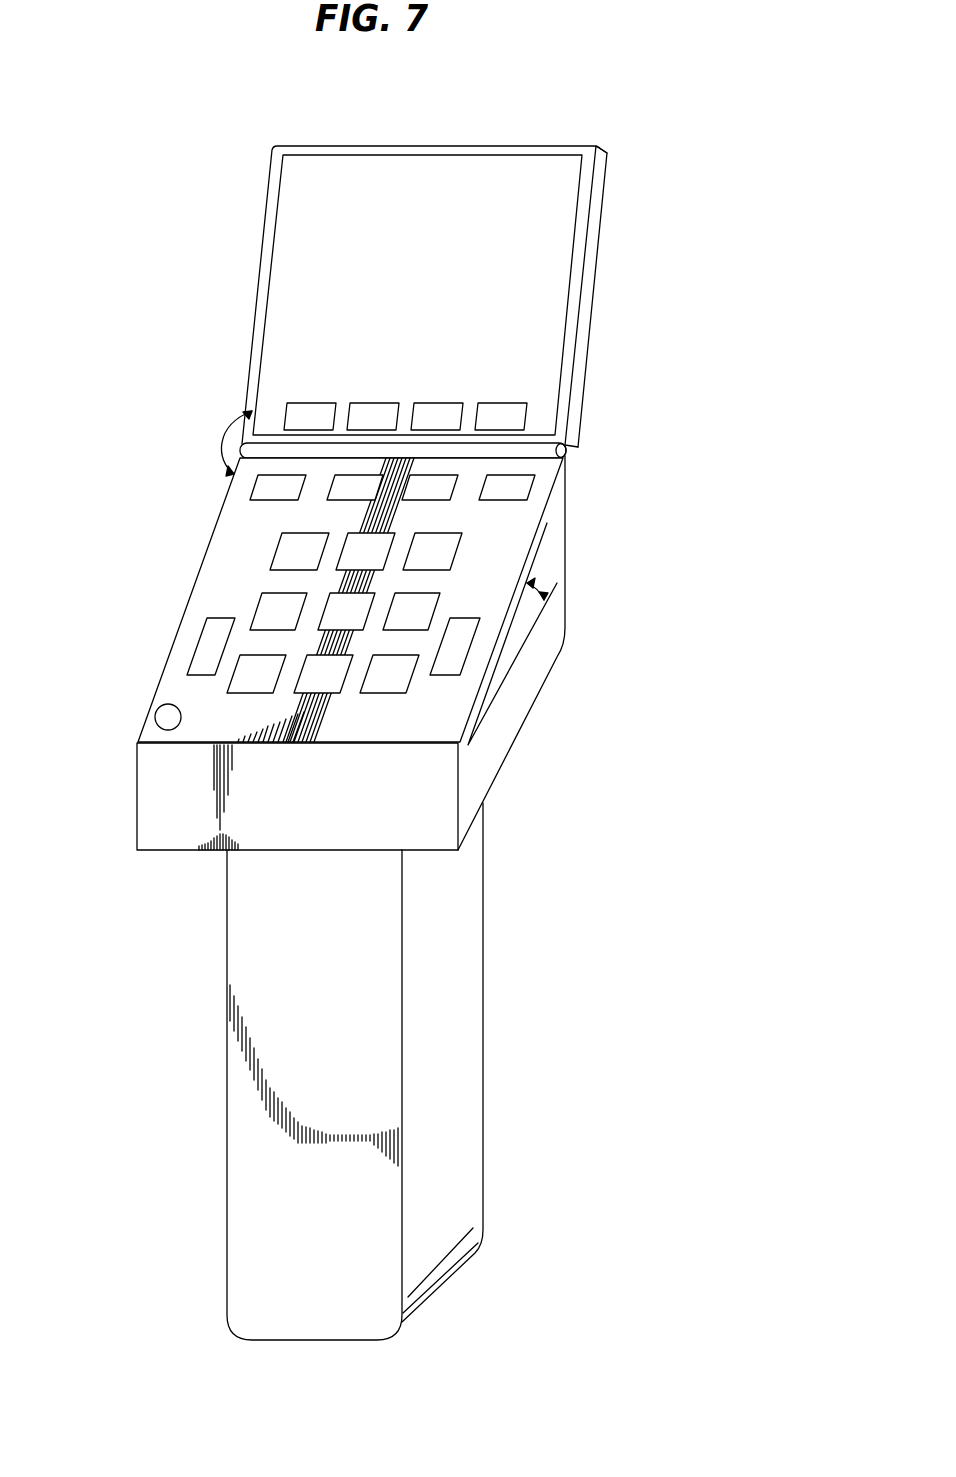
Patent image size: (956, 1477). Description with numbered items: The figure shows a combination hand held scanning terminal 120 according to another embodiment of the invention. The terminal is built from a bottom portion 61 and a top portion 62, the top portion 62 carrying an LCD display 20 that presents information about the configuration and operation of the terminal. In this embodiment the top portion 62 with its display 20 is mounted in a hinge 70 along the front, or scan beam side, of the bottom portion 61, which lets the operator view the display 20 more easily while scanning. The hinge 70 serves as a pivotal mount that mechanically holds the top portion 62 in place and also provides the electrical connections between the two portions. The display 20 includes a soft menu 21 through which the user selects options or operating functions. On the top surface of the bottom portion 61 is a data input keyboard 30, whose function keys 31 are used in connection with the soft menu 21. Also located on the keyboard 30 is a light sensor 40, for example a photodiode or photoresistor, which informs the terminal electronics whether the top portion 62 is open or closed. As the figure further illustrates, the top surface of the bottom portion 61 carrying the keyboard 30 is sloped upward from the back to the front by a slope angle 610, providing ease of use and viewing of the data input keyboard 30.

The combination hand held scanning terminal 120 is at (413, 92).
The top portion 62 is at (274, 146).
The LCD display 20 is at (540, 237).
The soft menu 21 is at (514, 412).
The hinge 70 is at (567, 451).
The function keys 31 is at (510, 483).
The angle α 610 is at (557, 583).
The data input keyboard 30 is at (210, 572).
The light sensor 40 is at (158, 717).
The bottom portion 61 is at (157, 793).